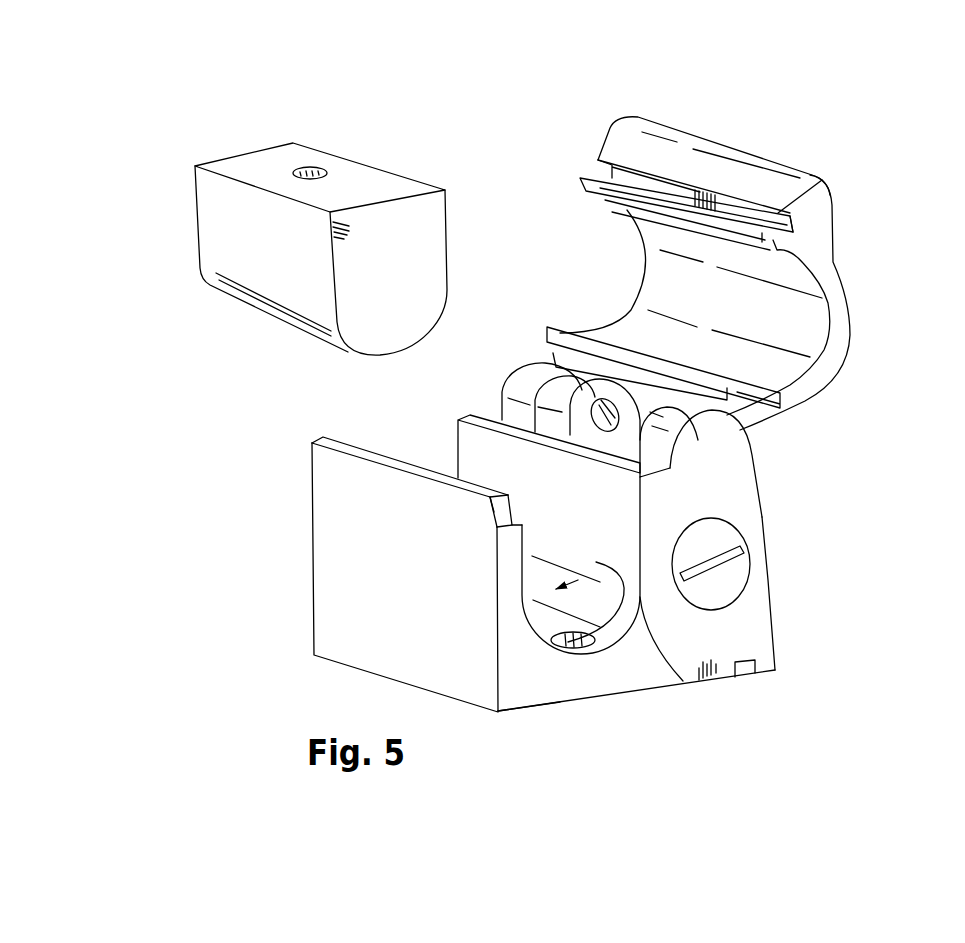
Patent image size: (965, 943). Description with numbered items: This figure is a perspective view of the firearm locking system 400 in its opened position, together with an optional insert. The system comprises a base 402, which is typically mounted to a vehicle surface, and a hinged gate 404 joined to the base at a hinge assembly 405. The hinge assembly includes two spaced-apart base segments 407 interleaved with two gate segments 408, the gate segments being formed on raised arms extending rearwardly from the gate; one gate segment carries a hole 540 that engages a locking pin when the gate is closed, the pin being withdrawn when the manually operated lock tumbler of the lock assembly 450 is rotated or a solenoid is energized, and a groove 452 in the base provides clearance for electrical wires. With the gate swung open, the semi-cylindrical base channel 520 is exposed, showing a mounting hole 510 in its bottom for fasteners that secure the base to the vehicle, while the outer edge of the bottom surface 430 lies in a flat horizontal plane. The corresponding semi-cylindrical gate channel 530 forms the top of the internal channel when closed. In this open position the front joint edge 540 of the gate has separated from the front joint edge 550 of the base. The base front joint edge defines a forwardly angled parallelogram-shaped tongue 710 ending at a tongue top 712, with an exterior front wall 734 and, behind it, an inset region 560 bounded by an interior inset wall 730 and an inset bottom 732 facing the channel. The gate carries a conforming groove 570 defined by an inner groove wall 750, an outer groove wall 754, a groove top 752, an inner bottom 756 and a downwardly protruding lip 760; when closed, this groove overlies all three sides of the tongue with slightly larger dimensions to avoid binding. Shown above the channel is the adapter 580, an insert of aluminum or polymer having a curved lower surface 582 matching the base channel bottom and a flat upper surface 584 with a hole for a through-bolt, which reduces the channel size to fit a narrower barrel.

The firearm locking system 400 is at (841, 410).
The base 402 is at (778, 573).
The hinged gate 404 is at (841, 360).
The hinge assembly 405 is at (718, 454).
The base segments 407 is at (563, 390).
The gate segments 408 is at (638, 396).
The bottom surface 430 is at (554, 707).
The lock assembly 450 is at (722, 573).
The groove 452 is at (748, 675).
The mounting hole 510 is at (603, 644).
The base channel 520 is at (690, 682).
The gate channel 530 is at (792, 299).
The front joint edge of gate / hole 540 is at (578, 180).
The front joint edge of base 550 is at (311, 444).
The inset region 560 is at (520, 503).
The groove 570 is at (803, 229).
The adapter 580 is at (366, 160).
The curved lower surface 582 is at (222, 290).
The flat upper surface 584 is at (268, 165).
The tongue 710 is at (370, 468).
The tongue top 712 is at (347, 436).
The interior inset wall 730 is at (509, 516).
The inset bottom 732 is at (520, 524).
The front wall of tongue 734 is at (491, 518).
The inner groove wall 750 is at (835, 268).
The groove top 752 is at (743, 217).
The outer groove wall 754 is at (818, 186).
The groove inner bottom 756 is at (658, 210).
The lip 760 is at (706, 184).